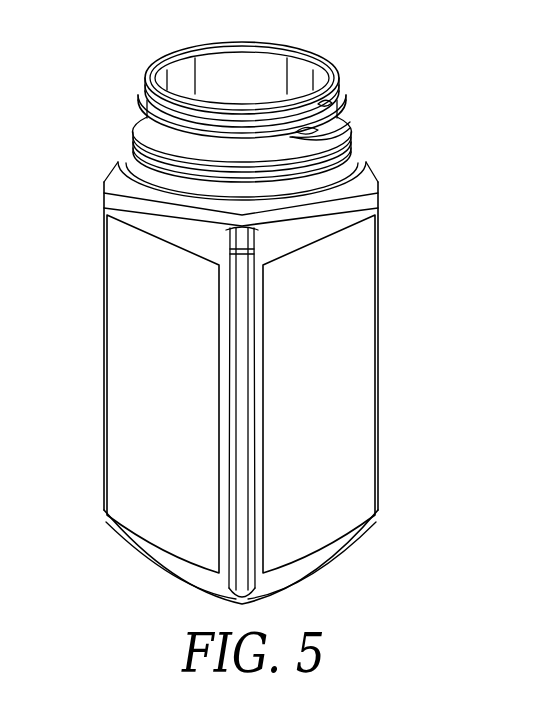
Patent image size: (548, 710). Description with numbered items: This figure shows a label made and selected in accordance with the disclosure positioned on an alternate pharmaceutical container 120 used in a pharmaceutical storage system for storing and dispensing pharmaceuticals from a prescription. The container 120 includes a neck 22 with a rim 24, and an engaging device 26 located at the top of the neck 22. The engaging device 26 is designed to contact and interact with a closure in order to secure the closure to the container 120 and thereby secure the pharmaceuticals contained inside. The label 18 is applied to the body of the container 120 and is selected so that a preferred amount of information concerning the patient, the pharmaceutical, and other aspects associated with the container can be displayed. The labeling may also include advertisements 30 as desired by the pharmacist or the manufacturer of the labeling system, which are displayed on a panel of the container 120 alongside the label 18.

The container 120 is at (265, 323).
The label 18 is at (118, 327).
The neck 22 is at (365, 67).
The rim 24 is at (134, 138).
The engaging device 26 is at (140, 93).
The advertisements 30 is at (363, 303).